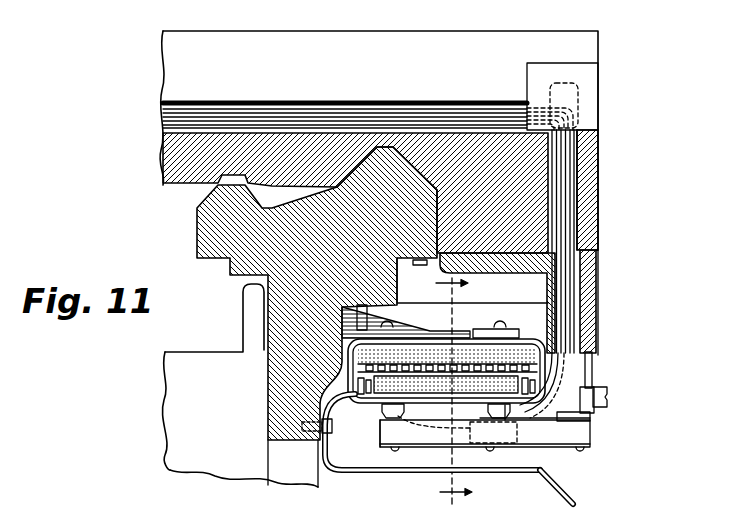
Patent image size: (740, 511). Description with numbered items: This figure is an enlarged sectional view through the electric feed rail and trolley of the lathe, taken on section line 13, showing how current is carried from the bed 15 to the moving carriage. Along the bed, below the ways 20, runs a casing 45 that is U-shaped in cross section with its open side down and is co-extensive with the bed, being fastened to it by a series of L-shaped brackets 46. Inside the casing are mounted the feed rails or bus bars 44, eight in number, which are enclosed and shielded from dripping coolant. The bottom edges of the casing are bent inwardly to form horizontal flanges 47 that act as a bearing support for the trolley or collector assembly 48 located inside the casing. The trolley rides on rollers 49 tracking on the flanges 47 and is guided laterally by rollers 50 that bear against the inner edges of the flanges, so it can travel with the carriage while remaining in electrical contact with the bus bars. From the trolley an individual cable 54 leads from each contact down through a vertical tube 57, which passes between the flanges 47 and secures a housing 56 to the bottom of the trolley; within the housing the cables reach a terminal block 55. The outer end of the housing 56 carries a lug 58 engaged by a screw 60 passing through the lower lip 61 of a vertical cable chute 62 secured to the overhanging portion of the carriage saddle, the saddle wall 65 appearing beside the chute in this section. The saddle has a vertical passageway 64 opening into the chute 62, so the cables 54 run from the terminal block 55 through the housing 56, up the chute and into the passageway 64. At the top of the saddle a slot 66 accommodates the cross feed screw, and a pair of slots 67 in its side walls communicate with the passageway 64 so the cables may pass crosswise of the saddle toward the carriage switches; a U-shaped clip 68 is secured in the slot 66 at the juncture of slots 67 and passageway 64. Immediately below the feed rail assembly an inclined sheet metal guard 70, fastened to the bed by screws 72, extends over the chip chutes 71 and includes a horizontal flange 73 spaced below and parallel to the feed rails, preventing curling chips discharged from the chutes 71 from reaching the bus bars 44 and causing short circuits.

The slot 66 is at (418, 55).
The slots 67 is at (398, 100).
The U-shaped clip 68 is at (586, 81).
The cable 54 is at (560, 173).
The vertical passageway 64 is at (577, 201).
The frame member 65 is at (587, 225).
The vertical cable chute 62 is at (578, 333).
The ways 20 is at (345, 187).
The section line 13 is at (472, 384).
The L-shaped brackets 46 is at (483, 330).
The trolley or collector assembly 48 is at (452, 385).
The rollers 49 is at (368, 383).
The feed rails or bus bars 44 is at (458, 338).
The casing 45 is at (533, 342).
The horizontal flanges 47 is at (372, 408).
The rollers 50 is at (383, 418).
The housing 56 is at (591, 436).
The vertical tube 57 is at (483, 410).
The terminal block 55 is at (507, 420).
The lower lip 61 is at (590, 380).
The screw 60 is at (606, 393).
The lug 58 is at (594, 414).
The horizontal flange 73 is at (418, 475).
The inclined guard 70 is at (557, 492).
The screws 72 is at (317, 443).
The bed 15 is at (227, 468).
The chip chutes 71 is at (315, 478).